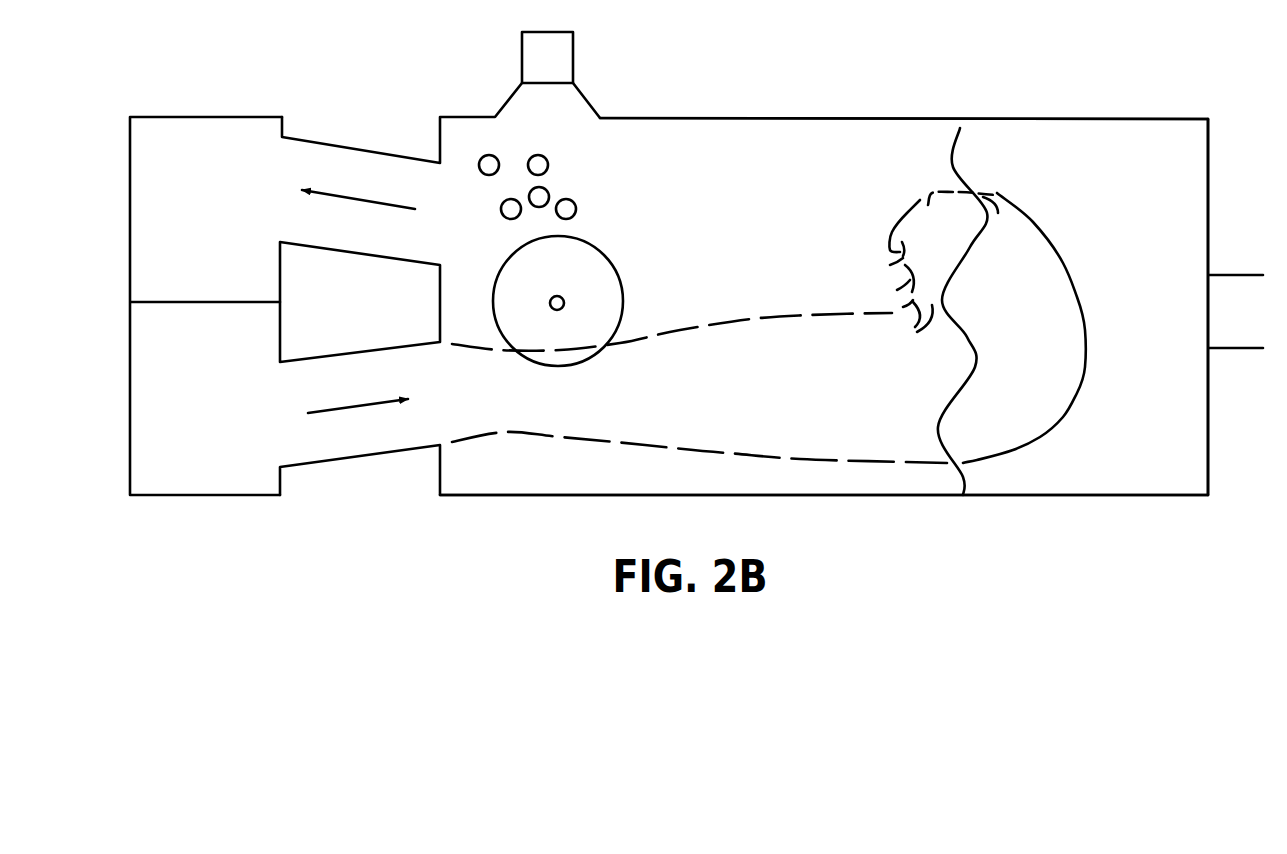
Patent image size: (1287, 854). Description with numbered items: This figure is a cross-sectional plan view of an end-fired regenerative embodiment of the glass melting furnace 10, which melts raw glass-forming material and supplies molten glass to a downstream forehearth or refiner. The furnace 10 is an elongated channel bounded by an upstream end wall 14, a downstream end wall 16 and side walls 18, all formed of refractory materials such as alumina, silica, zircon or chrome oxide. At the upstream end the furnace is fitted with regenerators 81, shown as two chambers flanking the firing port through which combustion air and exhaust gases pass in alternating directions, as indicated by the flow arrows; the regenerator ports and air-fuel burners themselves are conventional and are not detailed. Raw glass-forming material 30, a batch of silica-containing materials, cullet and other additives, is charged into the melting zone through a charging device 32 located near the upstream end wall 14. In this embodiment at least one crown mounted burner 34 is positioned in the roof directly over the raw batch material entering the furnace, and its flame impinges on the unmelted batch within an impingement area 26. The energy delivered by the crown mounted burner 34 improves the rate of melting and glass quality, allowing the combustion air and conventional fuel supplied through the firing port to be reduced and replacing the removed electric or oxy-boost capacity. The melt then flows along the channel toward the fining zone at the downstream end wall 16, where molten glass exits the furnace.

The glass melting furnace 10 is at (1168, 88).
The upstream end wall 14 is at (440, 293).
The downstream end wall 16 is at (1208, 417).
The side walls 18 is at (862, 118).
The impingement area 26 is at (558, 301).
The raw glass-forming material 30 is at (547, 187).
The charging device 32 is at (565, 53).
The crown mounted burners 34 is at (565, 302).
The regenerators 81 is at (272, 306).